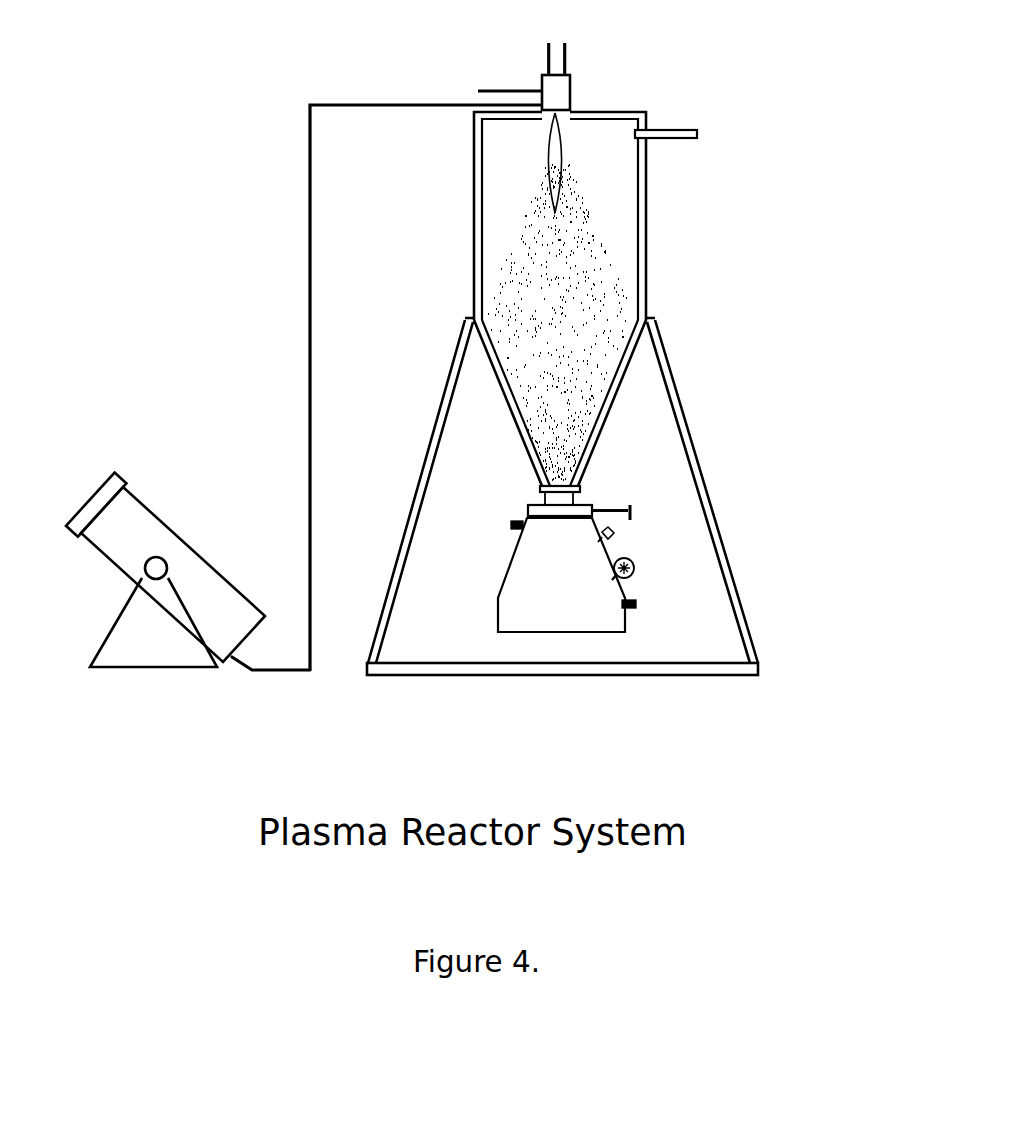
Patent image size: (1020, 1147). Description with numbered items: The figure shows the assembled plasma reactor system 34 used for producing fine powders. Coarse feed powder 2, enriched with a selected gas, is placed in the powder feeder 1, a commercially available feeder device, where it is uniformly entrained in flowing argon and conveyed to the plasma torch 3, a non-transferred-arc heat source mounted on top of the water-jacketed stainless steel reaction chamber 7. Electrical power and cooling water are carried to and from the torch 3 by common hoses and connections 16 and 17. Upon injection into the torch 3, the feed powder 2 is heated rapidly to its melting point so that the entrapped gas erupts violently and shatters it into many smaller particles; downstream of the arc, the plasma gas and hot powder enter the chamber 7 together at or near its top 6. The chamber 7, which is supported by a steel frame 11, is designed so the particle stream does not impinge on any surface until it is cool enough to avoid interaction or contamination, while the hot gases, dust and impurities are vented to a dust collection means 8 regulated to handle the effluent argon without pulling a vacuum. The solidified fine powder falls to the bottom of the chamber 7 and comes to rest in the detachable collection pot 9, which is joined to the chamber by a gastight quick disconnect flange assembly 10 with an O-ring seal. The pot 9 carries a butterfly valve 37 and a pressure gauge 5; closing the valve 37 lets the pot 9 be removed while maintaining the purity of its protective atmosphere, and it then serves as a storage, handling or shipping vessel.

The powder feeder 1 is at (141, 492).
The coarse feed powder 2 is at (306, 140).
The plasma torch 3 is at (577, 94).
The pressure gauge 5 is at (476, 89).
The top of the chamber 6 is at (572, 162).
The reaction chamber 7 is at (652, 240).
The dust collection means 8 is at (700, 134).
The collection pot 9 is at (630, 587).
The quick disconnect flange assembly 10 is at (587, 485).
The steel frame 11 is at (686, 392).
The hoses and connections 16 is at (544, 52).
The hoses and connections 17 is at (573, 52).
The plasma reactor system 34 is at (626, 293).
The butterfly valve 37 is at (640, 511).